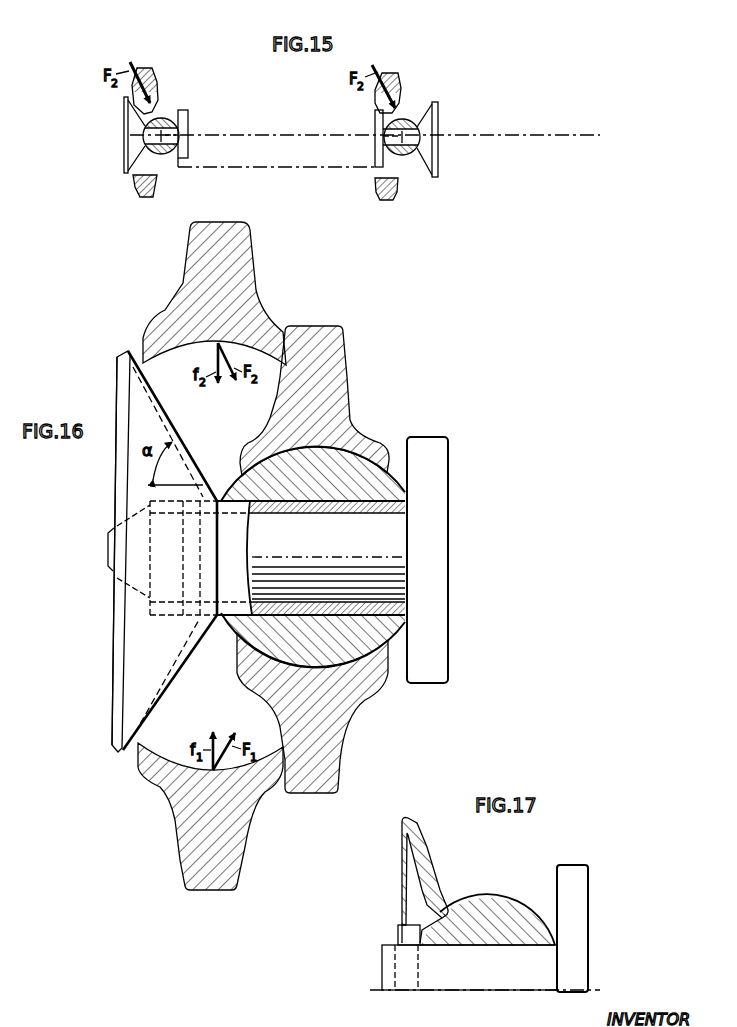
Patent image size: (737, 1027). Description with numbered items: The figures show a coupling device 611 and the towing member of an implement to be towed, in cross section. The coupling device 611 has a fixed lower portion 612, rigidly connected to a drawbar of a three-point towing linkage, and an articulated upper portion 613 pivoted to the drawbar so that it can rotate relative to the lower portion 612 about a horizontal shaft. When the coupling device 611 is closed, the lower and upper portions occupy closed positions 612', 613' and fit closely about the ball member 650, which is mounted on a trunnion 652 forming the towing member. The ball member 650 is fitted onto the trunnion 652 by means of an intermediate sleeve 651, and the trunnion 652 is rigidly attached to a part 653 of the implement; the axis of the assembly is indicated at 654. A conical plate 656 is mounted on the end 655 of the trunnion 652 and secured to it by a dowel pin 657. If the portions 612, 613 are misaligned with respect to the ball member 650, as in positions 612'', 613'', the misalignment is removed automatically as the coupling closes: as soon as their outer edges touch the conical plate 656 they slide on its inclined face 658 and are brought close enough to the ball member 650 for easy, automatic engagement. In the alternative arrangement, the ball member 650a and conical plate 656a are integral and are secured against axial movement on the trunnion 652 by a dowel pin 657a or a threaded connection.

In FIG. 16, the coupling device 611 is at (173, 817).
In FIG. 15, the lower portion 612 is at (370, 194).
In FIG. 16, the lower portion 612 is at (221, 816).
In FIG. 16, the closed position of lower portion 612' is at (316, 713).
In FIG. 15, the misaligned position of lower portion 612'' is at (127, 188).
In FIG. 16, the misaligned position of lower portion 612'' is at (187, 871).
In FIG. 15, the upper portion 613 is at (408, 93).
In FIG. 16, the upper portion 613 is at (227, 293).
In FIG. 16, the closed position of upper portion 613' is at (320, 401).
In FIG. 15, the misaligned position of upper portion 613'' is at (168, 91).
In FIG. 16, the misaligned position of upper portion 613'' is at (196, 250).
In FIG. 15, the ball member 650 is at (165, 116).
In FIG. 16, the ball member 650 is at (243, 493).
In FIG. 17, the ball member 650a is at (507, 905).
In FIG. 16, the intermediate sleeve 651 is at (325, 510).
In FIG. 15, the trunnion 652 is at (168, 157).
In FIG. 16, the trunnion 652 is at (233, 587).
In FIG. 17, the trunnion 652 is at (490, 980).
In FIG. 15, the part of the implement 653 is at (188, 117).
In FIG. 16, the part of the implement 653 is at (448, 471).
In FIG. 17, the part of the implement 653 is at (580, 896).
In FIG. 15, the connecting shaft 654 is at (279, 142).
In FIG. 16, the end of the trunnion 655 is at (111, 551).
In FIG. 15, the conical plate 656 is at (133, 130).
In FIG. 16, the conical plate 656 is at (138, 683).
In FIG. 17, the conical plate 656a is at (427, 867).
In FIG. 16, the dowel pin 657 is at (188, 573).
In FIG. 17, the dowel pin 657a is at (398, 934).
In FIG. 16, the inclined face 658 is at (172, 421).